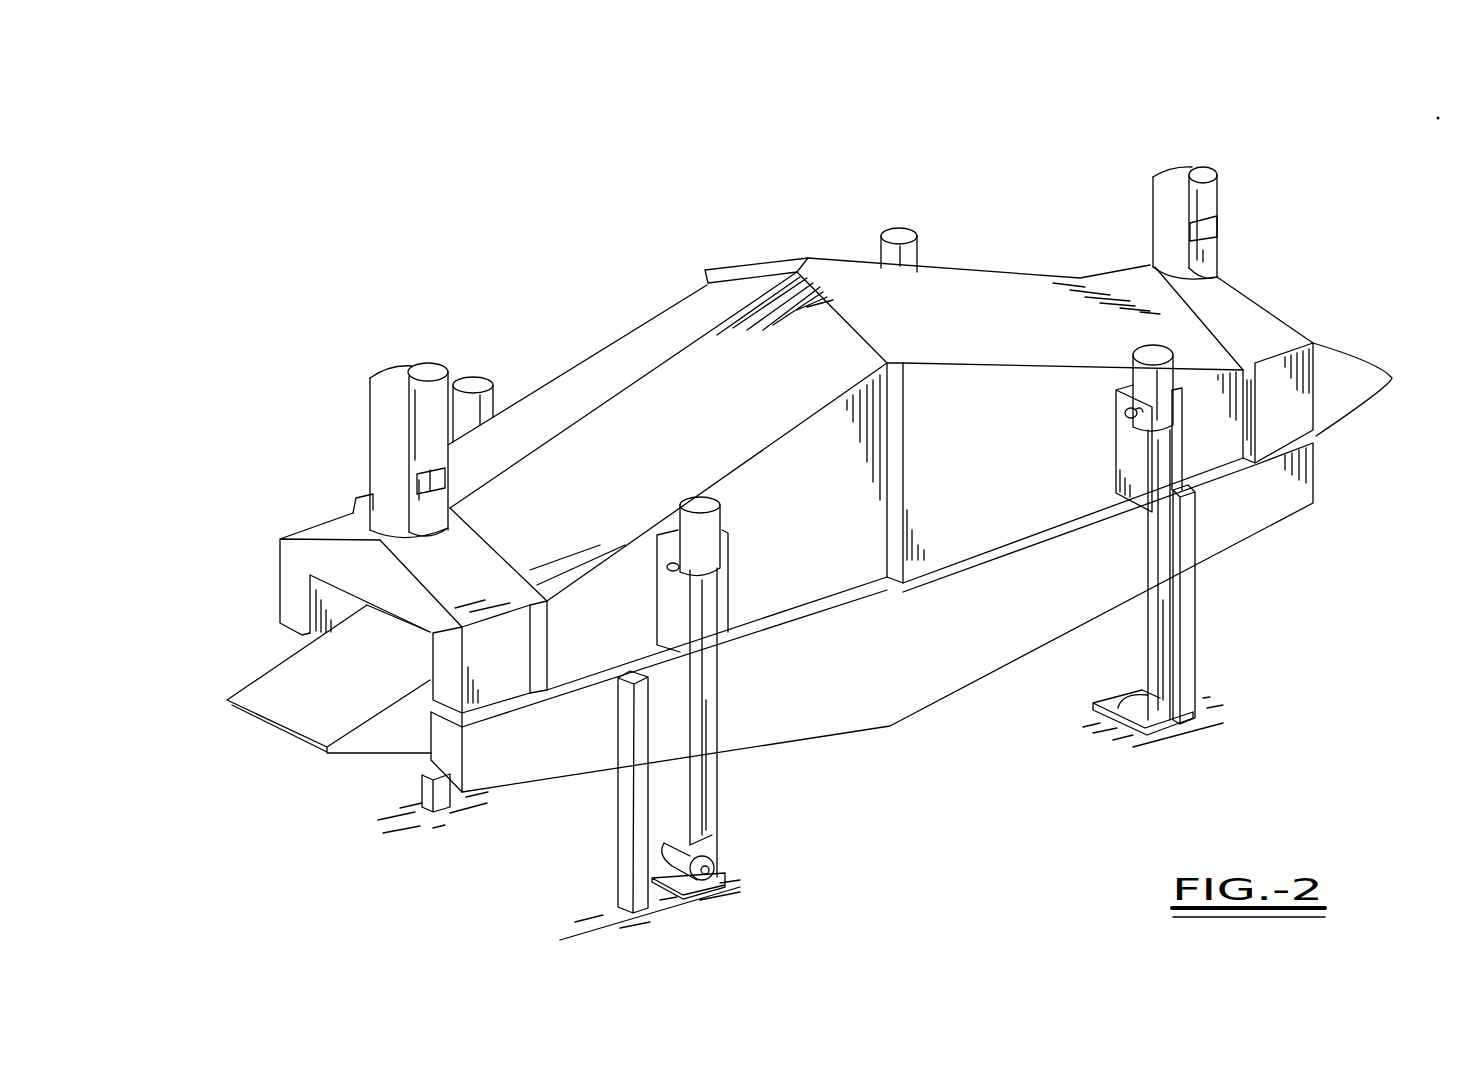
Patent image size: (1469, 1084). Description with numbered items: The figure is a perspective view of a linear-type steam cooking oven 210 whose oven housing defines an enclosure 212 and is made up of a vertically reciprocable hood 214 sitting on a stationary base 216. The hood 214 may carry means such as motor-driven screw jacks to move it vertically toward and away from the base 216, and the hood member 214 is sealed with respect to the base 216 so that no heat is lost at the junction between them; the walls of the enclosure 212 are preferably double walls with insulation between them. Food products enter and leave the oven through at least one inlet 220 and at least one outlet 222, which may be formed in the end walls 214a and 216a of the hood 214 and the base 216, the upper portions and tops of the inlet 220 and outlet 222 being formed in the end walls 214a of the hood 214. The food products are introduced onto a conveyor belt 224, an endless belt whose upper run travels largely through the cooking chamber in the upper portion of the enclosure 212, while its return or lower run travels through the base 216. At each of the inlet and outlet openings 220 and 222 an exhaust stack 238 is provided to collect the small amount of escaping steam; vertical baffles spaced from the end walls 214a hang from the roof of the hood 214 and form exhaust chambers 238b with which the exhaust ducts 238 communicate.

The cooking oven 210 is at (660, 221).
The enclosure 212 is at (606, 337).
The hood 214 is at (1005, 273).
The end walls of hood 214a is at (293, 562).
The base 216 is at (947, 667).
The end walls of base 216a is at (430, 768).
The inlet 220 is at (258, 640).
The outlet 222 is at (1344, 330).
The conveyor belt 224 is at (296, 714).
The exhaust stack 238 is at (377, 402).
The exhaust chambers 238b is at (465, 556).